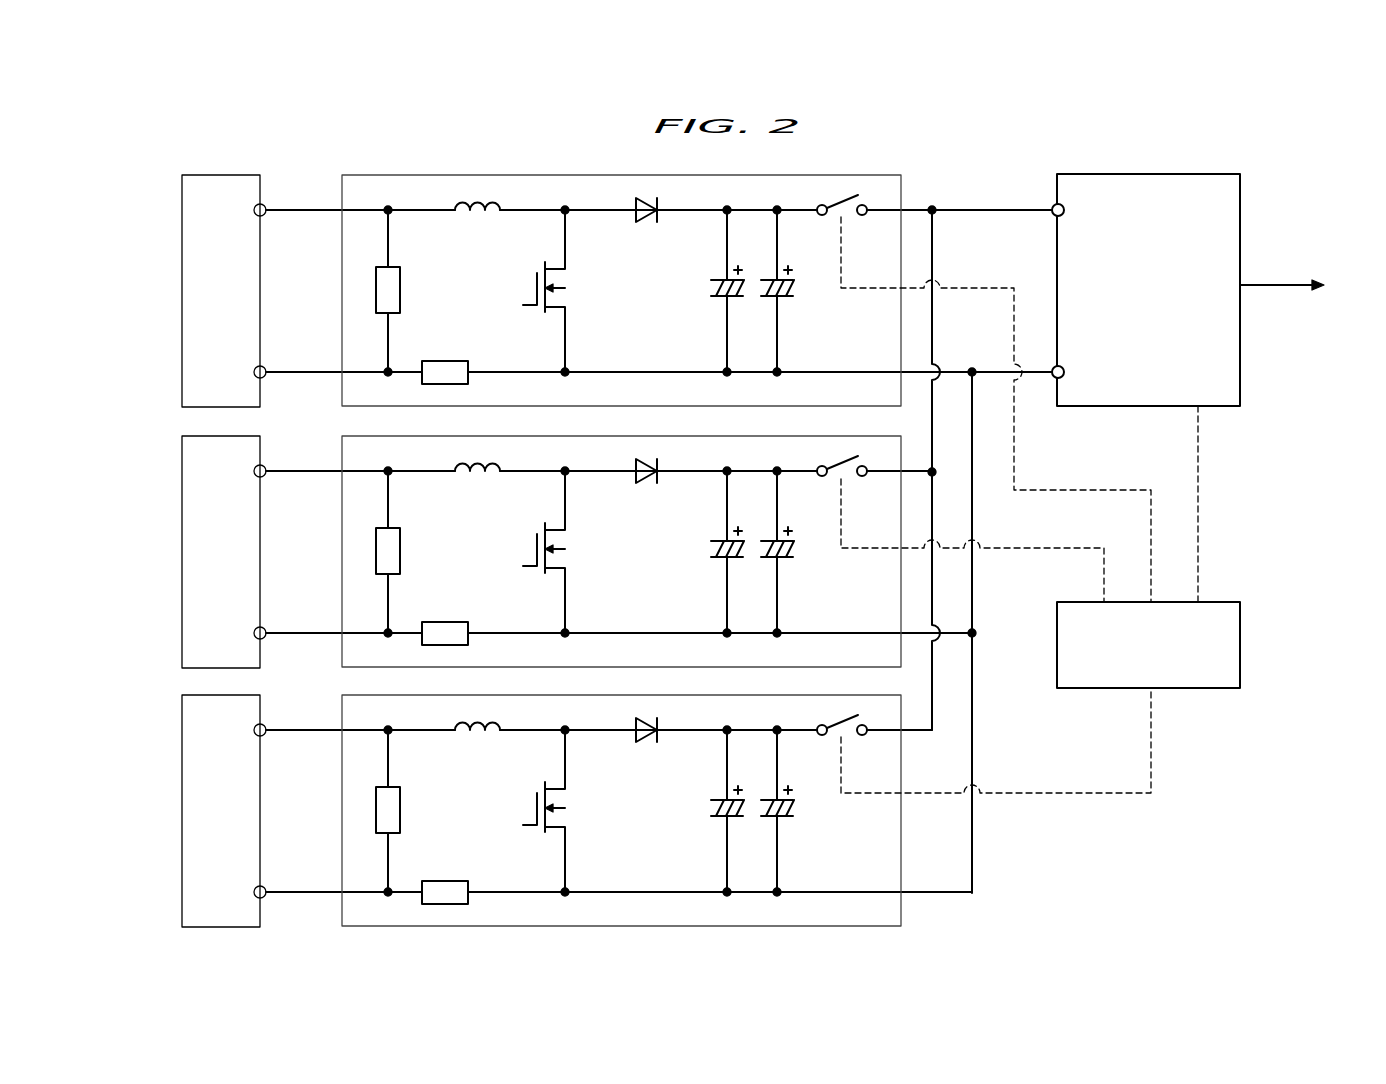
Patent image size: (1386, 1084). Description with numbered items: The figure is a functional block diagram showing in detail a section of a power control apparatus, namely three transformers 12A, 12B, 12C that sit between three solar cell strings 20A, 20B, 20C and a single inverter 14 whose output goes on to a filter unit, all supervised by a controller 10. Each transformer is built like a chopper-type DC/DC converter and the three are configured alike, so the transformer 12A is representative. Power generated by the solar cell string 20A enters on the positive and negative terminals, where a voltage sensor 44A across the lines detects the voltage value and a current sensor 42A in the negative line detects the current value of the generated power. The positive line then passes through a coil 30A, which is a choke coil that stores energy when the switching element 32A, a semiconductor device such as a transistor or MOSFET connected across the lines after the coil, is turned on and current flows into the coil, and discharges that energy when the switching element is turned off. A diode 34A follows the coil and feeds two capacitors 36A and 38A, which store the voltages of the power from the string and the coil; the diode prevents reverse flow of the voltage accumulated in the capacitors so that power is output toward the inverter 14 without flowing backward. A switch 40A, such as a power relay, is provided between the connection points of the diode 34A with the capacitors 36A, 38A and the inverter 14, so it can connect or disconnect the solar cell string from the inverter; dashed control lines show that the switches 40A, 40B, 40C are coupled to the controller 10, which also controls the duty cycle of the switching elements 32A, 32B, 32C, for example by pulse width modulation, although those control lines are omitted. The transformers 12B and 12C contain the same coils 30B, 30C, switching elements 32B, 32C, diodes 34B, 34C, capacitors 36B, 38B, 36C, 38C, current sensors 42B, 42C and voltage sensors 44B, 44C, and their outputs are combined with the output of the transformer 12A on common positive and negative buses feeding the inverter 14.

The controller 10 is at (1240, 645).
The transformer 12A is at (341, 289).
The transformer 12B is at (593, 551).
The transformer 12C is at (593, 810).
The inverter 14 is at (1153, 173).
The solar cell string 20A is at (182, 289).
The solar cell string 20B is at (194, 552).
The solar cell string 20C is at (194, 811).
The coil 30A is at (480, 212).
The coil 30B is at (477, 492).
The coil 30C is at (477, 751).
The switching element 32A is at (563, 298).
The switching element 32B is at (573, 552).
The switching element 32C is at (573, 811).
The diode 34A is at (646, 222).
The diode 34B is at (648, 489).
The diode 34C is at (648, 748).
The capacitor 36A is at (712, 289).
The capacitor 36B is at (704, 552).
The capacitor 36C is at (704, 811).
The capacitor 38A is at (794, 290).
The capacitor 38B is at (801, 552).
The capacitor 38C is at (801, 811).
The switch 40A is at (851, 216).
The switch 40B is at (855, 487).
The switch 40C is at (855, 746).
The current sensor 42A is at (445, 360).
The current sensor 42B is at (445, 615).
The current sensor 42C is at (445, 874).
The voltage sensor 44A is at (401, 289).
The voltage sensor 44B is at (416, 552).
The voltage sensor 44C is at (416, 811).